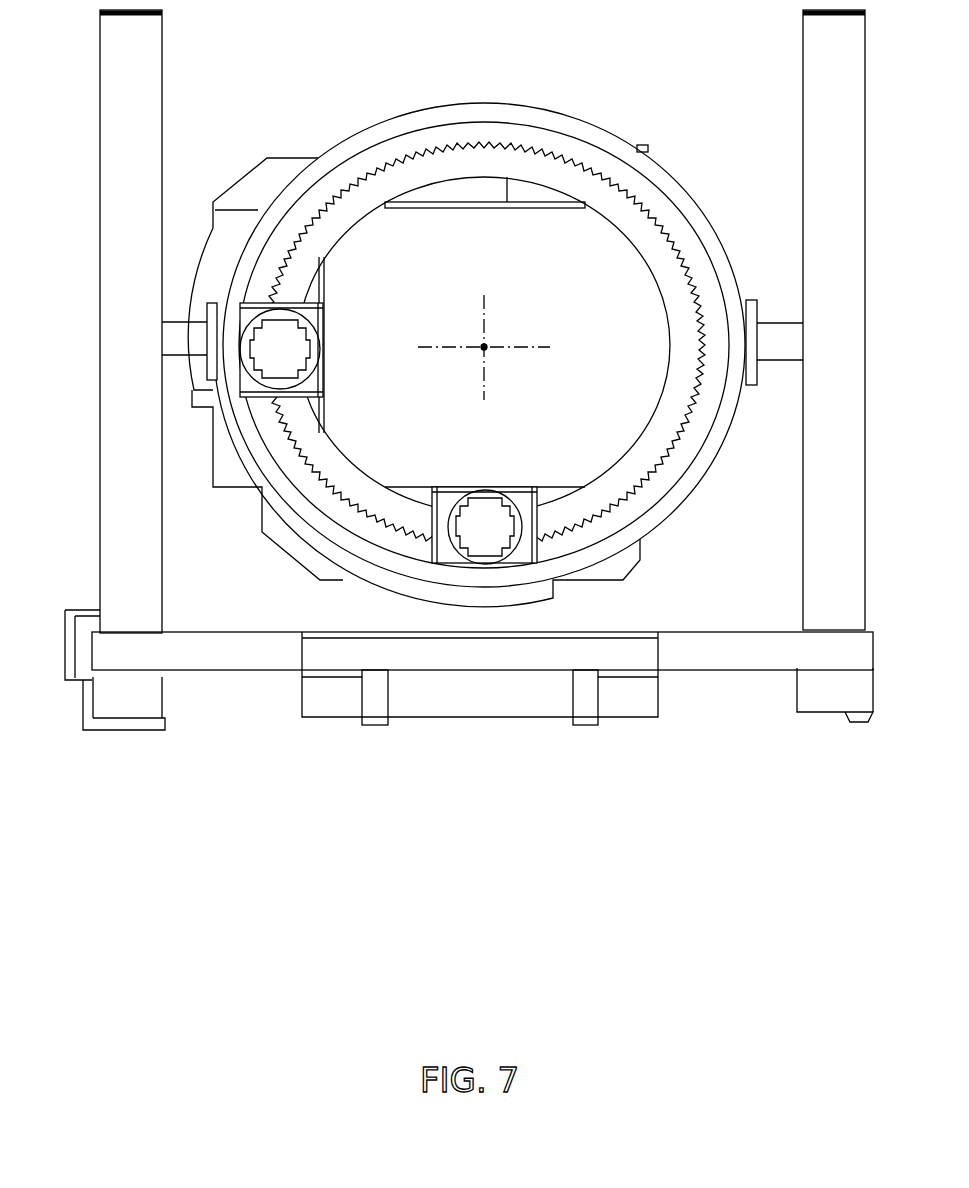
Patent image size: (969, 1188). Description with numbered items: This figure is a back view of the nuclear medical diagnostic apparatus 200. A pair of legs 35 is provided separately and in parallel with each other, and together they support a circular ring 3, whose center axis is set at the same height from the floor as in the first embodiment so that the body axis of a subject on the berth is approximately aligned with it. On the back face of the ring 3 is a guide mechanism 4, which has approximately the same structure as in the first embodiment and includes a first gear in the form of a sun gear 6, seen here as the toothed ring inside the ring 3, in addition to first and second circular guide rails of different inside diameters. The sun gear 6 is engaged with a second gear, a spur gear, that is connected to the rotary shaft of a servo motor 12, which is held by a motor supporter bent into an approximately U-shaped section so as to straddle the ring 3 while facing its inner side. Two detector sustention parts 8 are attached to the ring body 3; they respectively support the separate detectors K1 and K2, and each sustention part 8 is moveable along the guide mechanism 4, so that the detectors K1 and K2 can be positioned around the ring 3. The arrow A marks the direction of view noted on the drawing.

The legs 35 is at (100, 68).
The ring 3 is at (510, 104).
The sun gear 6 is at (668, 247).
The guide mechanism 4 is at (690, 334).
The detector sustention part 8 is at (338, 310).
The servo motor 12 is at (302, 348).
The detector K1 is at (470, 210).
The detector K2 is at (326, 405).
The viewing direction A is at (578, 72).
The apparatus 200 is at (493, 893).